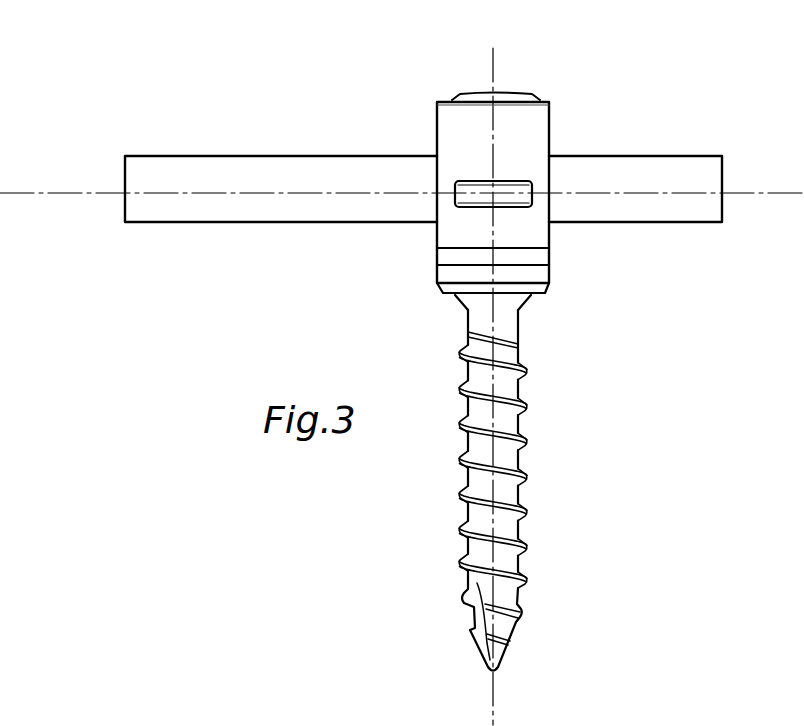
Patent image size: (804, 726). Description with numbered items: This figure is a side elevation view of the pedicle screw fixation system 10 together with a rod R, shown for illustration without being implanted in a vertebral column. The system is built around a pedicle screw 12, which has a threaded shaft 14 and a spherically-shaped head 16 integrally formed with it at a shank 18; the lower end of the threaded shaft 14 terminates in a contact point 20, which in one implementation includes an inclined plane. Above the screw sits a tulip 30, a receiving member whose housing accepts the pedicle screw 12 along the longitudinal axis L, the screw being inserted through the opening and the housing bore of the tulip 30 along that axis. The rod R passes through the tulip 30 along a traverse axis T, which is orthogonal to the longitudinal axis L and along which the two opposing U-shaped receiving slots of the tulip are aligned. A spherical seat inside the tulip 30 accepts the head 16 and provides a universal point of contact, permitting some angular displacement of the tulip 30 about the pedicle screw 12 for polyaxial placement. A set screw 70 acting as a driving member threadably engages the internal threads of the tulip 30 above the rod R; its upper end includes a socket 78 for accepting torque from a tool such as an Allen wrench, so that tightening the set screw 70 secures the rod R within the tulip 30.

The pedicle screw fixation system 10 is at (553, 112).
The tulip 30 is at (552, 238).
The head 16 is at (531, 296).
The shank 18 is at (519, 330).
The pedicle screw 12 is at (532, 438).
The threaded shaft 14 is at (520, 493).
The contact point 20 is at (490, 674).
The set screw 70 is at (517, 94).
The socket 78 is at (470, 94).
The rod R is at (233, 173).
The traverse axis T is at (47, 192).
The longitudinal axis L is at (497, 700).